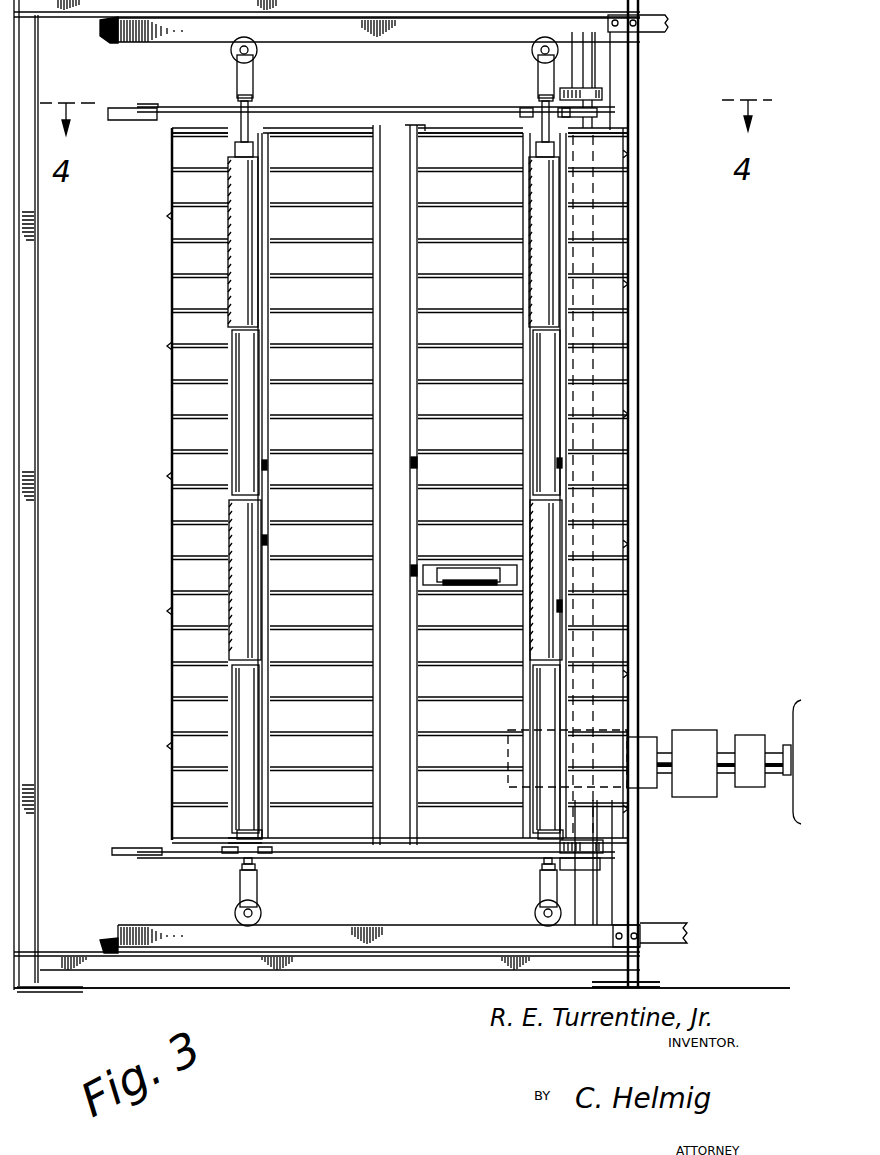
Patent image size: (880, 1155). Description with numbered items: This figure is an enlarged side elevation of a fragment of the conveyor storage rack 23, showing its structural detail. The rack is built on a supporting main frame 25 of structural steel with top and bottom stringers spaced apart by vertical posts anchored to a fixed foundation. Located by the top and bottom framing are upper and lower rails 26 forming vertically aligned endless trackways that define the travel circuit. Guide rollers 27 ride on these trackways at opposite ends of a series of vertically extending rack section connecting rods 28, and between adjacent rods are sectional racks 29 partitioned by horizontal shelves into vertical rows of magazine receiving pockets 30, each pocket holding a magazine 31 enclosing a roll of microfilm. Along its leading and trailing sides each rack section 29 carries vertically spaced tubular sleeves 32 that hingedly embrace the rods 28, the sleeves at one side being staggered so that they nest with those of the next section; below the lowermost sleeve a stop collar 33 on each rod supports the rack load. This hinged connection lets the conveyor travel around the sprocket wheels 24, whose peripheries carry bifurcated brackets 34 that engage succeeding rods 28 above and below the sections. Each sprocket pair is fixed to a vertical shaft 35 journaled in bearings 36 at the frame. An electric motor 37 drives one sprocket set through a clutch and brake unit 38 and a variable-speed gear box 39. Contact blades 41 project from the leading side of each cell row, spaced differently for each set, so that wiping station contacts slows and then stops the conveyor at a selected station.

The conveyor storage rack 23 is at (162, 492).
The sprocket wheel 24 is at (381, 104).
The supporting main frame 25 is at (640, 960).
The upper and lower rails 26 is at (165, 44).
The guide rollers 27 is at (258, 52).
The rack section connecting rods 28 is at (250, 128).
The sectional rack 29 is at (333, 128).
The magazine receiving pocket 30 is at (448, 185).
The magazine 31 is at (470, 565).
The tubular sleeves 32 is at (545, 256).
The stop collar 33 is at (228, 840).
The bifurcated brackets 34 is at (226, 110).
The vertical shaft 35 is at (593, 887).
The bearings 36 is at (612, 34).
The electric motor 37 is at (790, 725).
The clutch and brake unit 38 is at (742, 735).
The variable-speed gear box 39 is at (690, 728).
The contact blades 41 is at (562, 463).